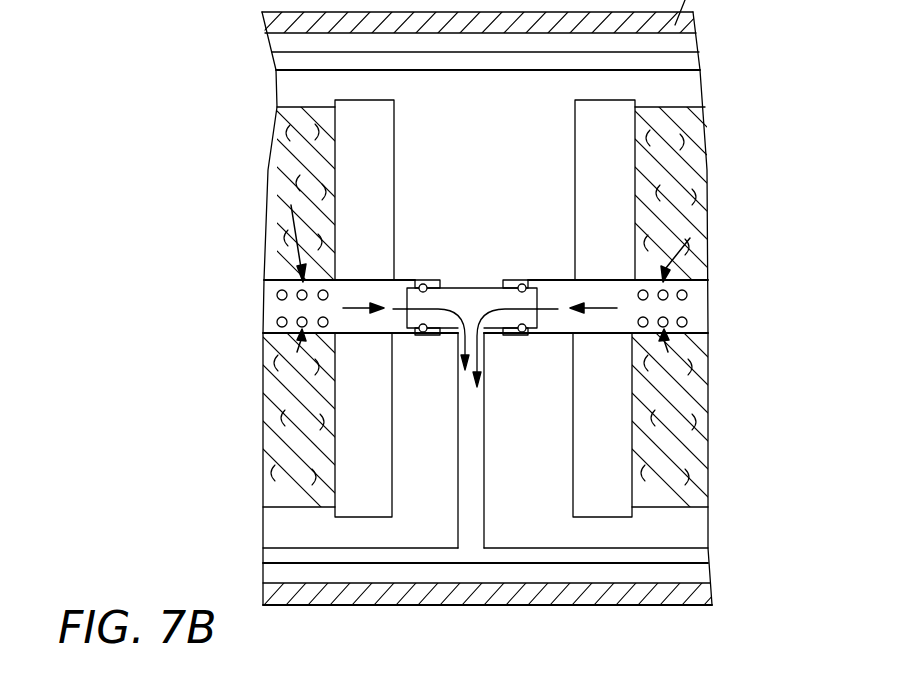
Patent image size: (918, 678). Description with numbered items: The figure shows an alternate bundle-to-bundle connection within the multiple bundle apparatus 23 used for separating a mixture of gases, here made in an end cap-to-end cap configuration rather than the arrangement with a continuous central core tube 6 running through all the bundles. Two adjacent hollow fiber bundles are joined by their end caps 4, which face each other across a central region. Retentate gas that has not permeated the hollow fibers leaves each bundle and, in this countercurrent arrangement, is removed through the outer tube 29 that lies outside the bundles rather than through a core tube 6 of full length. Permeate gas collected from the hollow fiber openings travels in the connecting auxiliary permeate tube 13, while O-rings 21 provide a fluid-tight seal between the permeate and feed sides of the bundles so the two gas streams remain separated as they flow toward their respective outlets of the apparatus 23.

The end cap 4 is at (382, 151).
The central core tube 6 is at (380, 300).
The auxiliary permeate tube 13 is at (288, 58).
The O-ring 21 is at (521, 284).
The multiple bundle apparatus 23 is at (708, 598).
The outer tube 29 is at (449, 552).